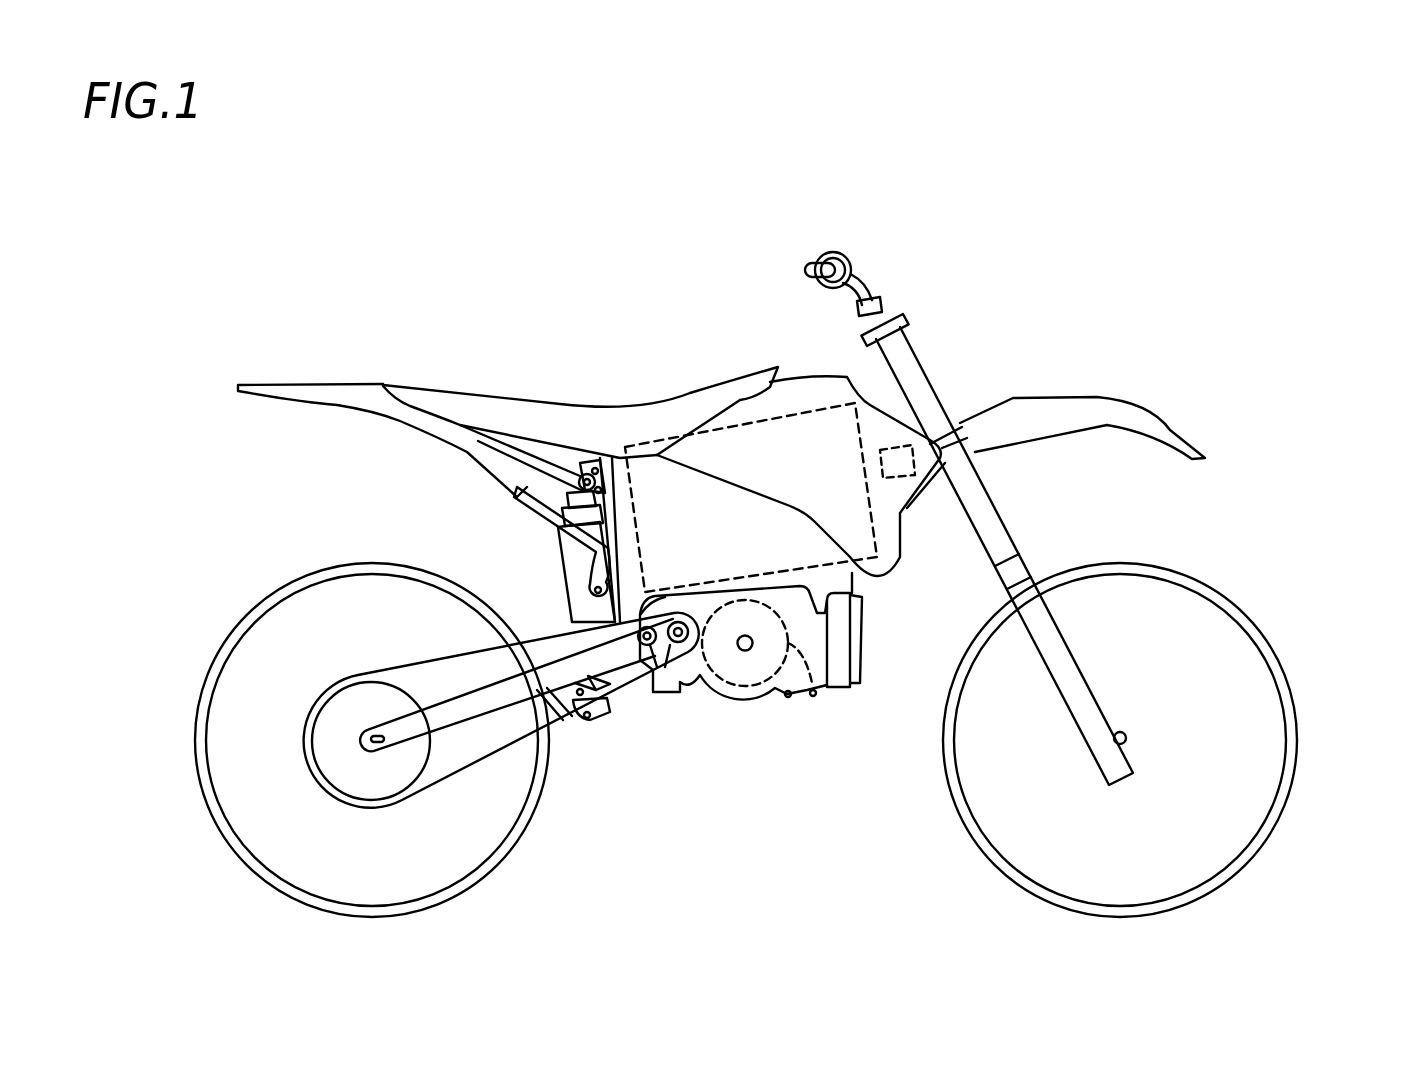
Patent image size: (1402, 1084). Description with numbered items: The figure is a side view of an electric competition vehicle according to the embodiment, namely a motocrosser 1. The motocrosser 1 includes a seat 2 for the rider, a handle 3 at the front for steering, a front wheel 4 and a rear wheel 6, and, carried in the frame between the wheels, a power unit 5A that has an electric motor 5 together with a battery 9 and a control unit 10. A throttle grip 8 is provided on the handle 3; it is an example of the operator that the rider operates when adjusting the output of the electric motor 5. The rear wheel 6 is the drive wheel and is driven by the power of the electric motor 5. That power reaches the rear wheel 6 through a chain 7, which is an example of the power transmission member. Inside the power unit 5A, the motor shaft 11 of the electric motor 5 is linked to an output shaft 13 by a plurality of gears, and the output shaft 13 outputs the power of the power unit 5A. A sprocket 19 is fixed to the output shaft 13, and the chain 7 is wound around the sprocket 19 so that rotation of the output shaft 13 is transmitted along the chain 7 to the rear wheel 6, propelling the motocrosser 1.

The motocrosser 1 is at (597, 303).
The seat 2 is at (490, 410).
The handle 3 is at (858, 275).
The front wheel 4 is at (1299, 740).
The electric motor 5 is at (813, 697).
The power unit 5A is at (722, 697).
The rear wheel 6 is at (196, 740).
The chain 7 is at (573, 637).
The throttle grip 8 is at (817, 262).
The battery 9 is at (827, 400).
The control unit 10 is at (902, 478).
The motor shaft 11 is at (752, 652).
The output shaft 13 is at (678, 643).
The sprocket 19 is at (648, 646).